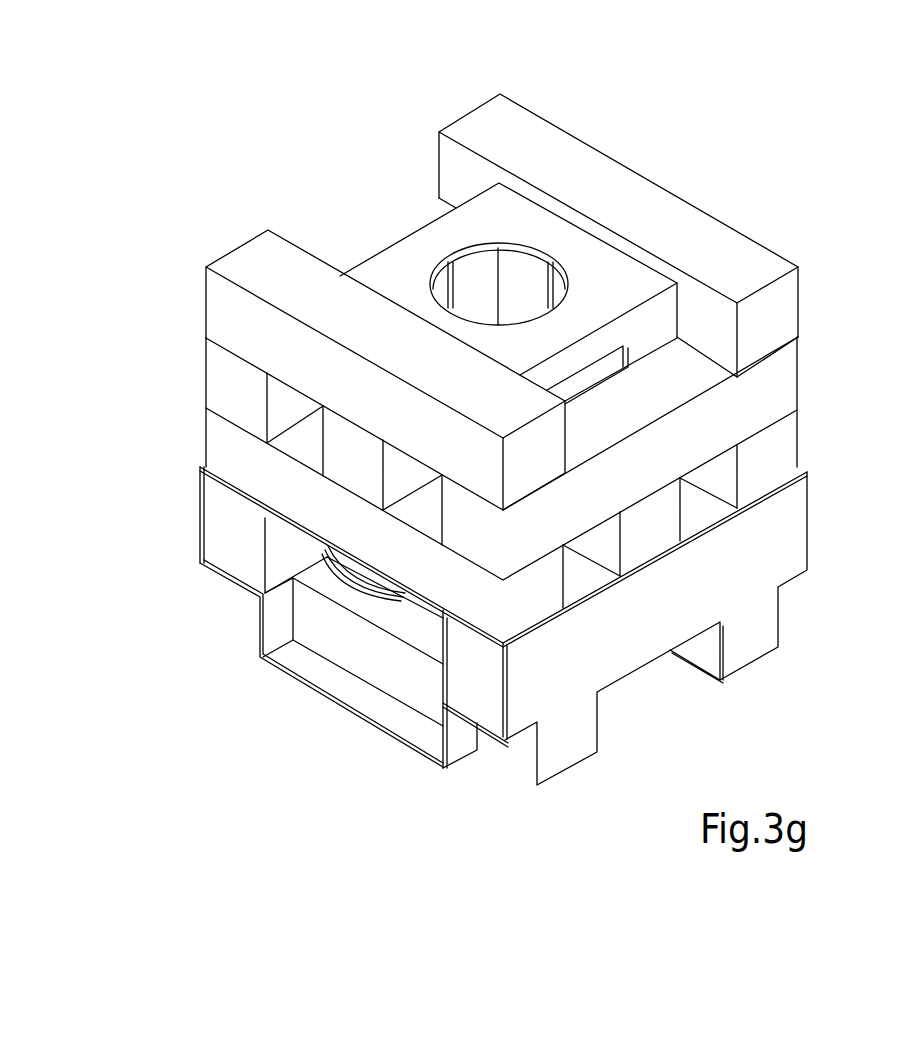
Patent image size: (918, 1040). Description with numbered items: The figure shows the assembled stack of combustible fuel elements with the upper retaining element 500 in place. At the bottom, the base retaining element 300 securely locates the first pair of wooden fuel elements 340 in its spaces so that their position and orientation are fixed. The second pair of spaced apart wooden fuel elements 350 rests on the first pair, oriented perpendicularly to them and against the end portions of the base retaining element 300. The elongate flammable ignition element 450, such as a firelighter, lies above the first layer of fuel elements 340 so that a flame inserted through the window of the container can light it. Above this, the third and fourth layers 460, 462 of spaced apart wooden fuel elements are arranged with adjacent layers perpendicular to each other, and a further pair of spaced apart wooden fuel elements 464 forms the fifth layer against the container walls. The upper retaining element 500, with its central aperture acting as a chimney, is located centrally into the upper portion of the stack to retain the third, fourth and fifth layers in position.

The base retaining element 300 is at (257, 632).
The first pair of wooden fuel elements 340 is at (408, 673).
The second pair of spaced apart wooden fuel elements 350 is at (235, 541).
The elongate flammable ignition element 450 is at (343, 587).
The third layer of spaced apart wooden fuel elements 460 is at (210, 443).
The fourth layer of spaced apart wooden fuel elements 462 is at (218, 375).
The further pair of spaced apart wooden fuel elements 464 is at (495, 113).
The upper retaining element 500 is at (608, 280).